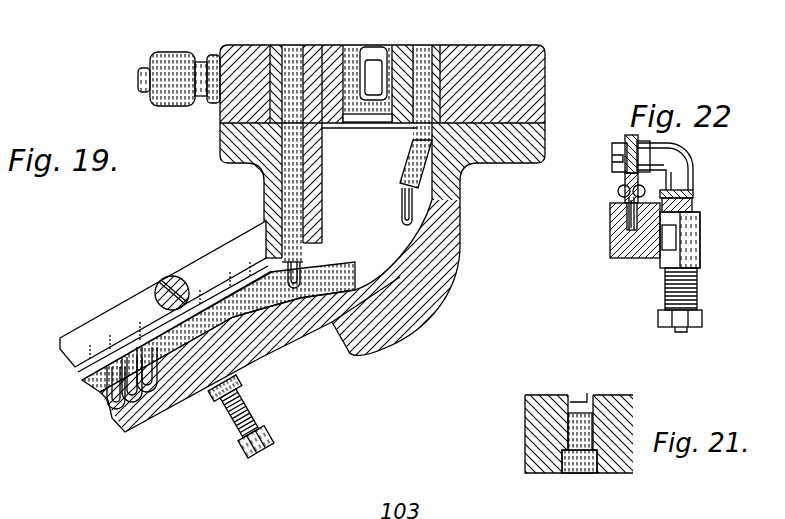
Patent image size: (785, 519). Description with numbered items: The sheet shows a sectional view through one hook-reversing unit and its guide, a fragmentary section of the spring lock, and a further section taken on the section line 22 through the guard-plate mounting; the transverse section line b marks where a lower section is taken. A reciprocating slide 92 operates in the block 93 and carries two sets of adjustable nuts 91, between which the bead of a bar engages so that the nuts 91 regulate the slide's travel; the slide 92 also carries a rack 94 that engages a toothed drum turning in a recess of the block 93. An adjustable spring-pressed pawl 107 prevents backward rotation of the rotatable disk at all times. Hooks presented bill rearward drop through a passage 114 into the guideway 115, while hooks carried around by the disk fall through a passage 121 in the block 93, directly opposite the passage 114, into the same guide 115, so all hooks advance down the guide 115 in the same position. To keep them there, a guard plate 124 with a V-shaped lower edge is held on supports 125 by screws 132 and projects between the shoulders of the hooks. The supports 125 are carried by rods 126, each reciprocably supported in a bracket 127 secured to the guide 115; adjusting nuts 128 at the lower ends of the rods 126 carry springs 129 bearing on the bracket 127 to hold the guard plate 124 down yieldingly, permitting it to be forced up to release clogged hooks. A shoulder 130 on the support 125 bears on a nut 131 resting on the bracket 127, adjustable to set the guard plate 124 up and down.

In FIG. 19, the section line 22 is at (260, 359).
In FIG. 19, the adjustable nuts 91 is at (180, 52).
In FIG. 19, the reciprocating slide 92 is at (137, 85).
In FIG. 19, the block 93 is at (547, 63).
In FIG. 21, the block 93 is at (528, 395).
In FIG. 19, the rack 94 is at (373, 48).
In FIG. 21, the adjustable spring pressed pawl 107 is at (583, 393).
In FIG. 19, the passage 114 is at (290, 143).
In FIG. 19, the guideway 115 is at (260, 357).
In FIG. 19, the passage 121 is at (433, 47).
In FIG. 19, the guard plate 124 is at (100, 320).
In FIG. 22, the guard plate 124 is at (625, 182).
In FIG. 22, the support 125 is at (680, 162).
In FIG. 22, the rod 126 is at (683, 333).
In FIG. 22, the bracket 127 is at (697, 247).
In FIG. 22, the adjusting nuts 128 is at (658, 322).
In FIG. 22, the spring 129 is at (665, 288).
In FIG. 22, the shoulder 130 is at (692, 207).
In FIG. 22, the nut 131 is at (692, 197).
In FIG. 19, the screws 132 is at (163, 278).
In FIG. 22, the screws 132 is at (613, 150).
In FIG. 19, the section line b is at (420, 178).